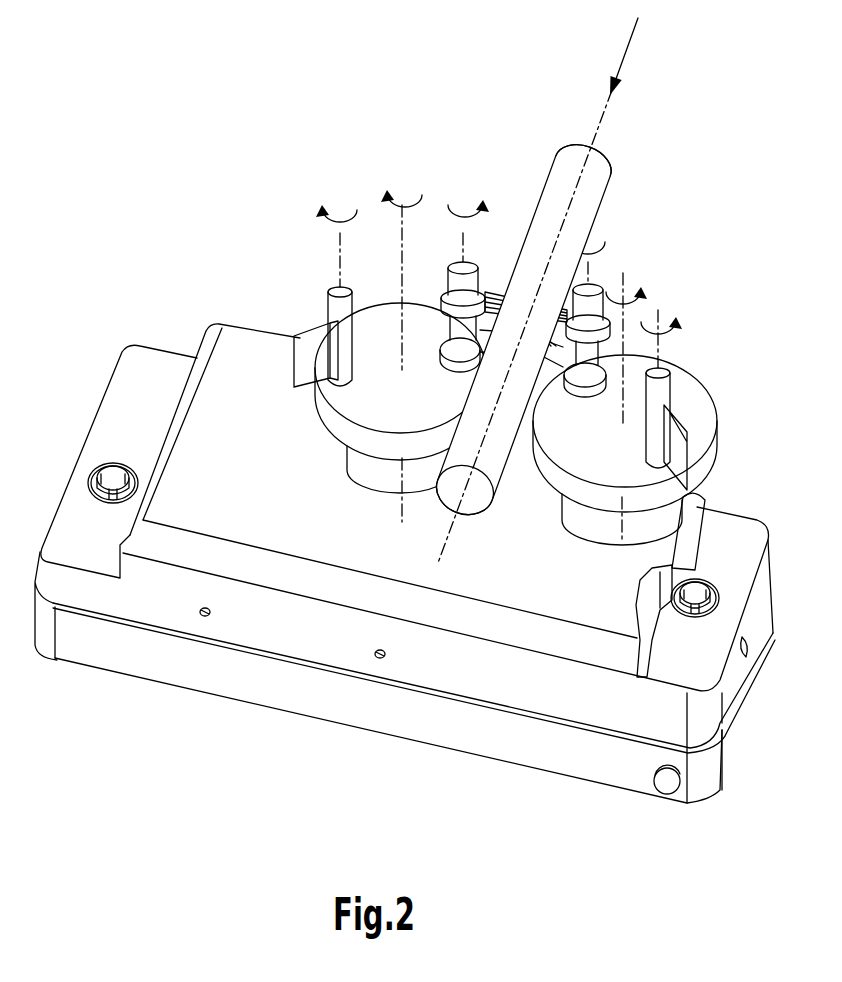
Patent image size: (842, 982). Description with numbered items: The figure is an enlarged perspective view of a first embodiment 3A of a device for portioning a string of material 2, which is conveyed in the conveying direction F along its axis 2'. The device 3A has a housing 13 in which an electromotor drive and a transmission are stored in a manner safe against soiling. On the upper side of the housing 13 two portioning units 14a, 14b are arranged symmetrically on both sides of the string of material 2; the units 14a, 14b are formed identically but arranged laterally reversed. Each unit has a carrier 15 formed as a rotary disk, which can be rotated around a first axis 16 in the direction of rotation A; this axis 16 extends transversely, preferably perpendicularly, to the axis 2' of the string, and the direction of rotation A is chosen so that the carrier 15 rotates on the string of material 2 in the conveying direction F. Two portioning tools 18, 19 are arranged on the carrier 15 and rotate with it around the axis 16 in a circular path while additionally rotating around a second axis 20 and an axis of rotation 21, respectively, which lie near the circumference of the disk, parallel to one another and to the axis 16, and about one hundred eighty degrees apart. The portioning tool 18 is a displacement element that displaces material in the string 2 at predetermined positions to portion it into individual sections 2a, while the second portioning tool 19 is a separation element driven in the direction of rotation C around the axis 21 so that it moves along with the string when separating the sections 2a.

The housing 13 is at (180, 677).
The portioning unit 14a is at (705, 253).
The portioning unit 14b is at (466, 186).
The carrier 15 is at (706, 418).
The first axis 16 is at (625, 288).
The portioning tool 18 is at (571, 366).
The second portioning tool 19 is at (689, 458).
The second axis 20 is at (592, 247).
The axis of rotation 21 is at (664, 316).
The string of material 2 is at (523, 316).
The axis of the string of material 2' is at (606, 160).
The sections 2a is at (484, 510).
The first embodiment of the device 3A is at (753, 341).
The conveying direction F is at (538, 290).
The direction of rotation A is at (630, 286).
The direction of rotation C is at (667, 332).